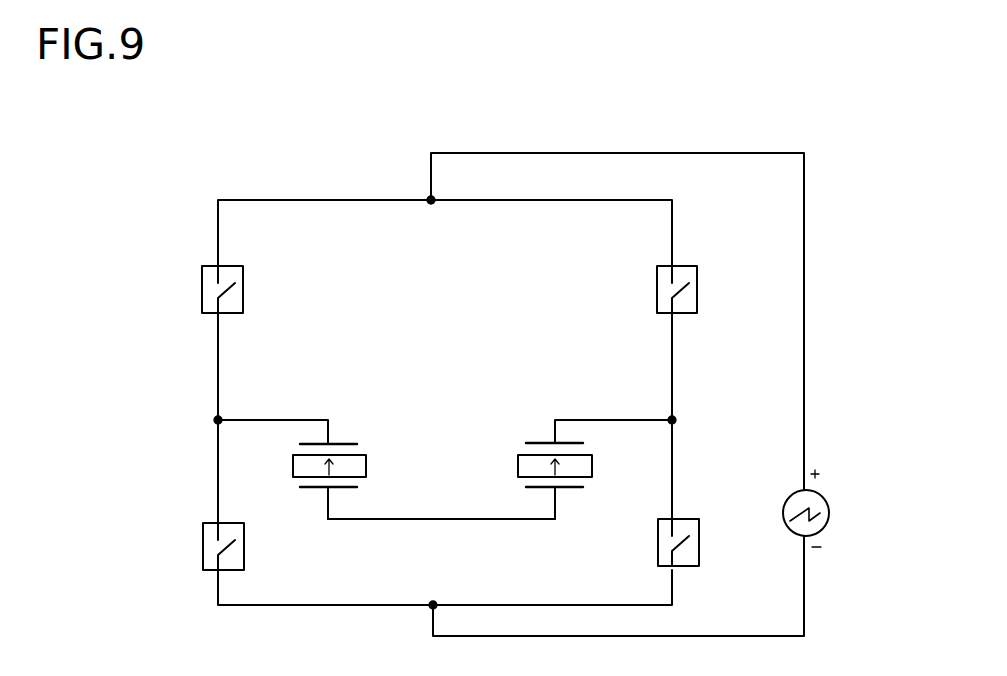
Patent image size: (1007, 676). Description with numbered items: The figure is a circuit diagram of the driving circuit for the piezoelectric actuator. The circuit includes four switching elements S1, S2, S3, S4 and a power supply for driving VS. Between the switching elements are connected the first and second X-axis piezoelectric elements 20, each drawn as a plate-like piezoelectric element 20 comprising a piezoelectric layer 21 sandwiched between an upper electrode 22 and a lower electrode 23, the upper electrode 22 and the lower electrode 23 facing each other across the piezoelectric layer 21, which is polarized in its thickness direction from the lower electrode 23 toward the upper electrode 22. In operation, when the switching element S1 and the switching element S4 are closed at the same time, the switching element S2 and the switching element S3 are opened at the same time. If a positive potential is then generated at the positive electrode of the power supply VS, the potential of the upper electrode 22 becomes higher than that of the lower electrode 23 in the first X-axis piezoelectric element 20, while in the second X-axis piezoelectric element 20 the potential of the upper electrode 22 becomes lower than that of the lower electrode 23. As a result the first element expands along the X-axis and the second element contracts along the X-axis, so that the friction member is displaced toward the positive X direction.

The plate-like piezoelectric element 20 is at (445, 436).
The piezoelectric layer 21 is at (293, 465).
The upper electrode 22 is at (314, 443).
The lower electrode 23 is at (447, 519).
The switching element S1 is at (202, 289).
The switching element S2 is at (201, 546).
The switching element S3 is at (696, 289).
The switching element S4 is at (698, 542).
The power supply for driving VS is at (821, 508).